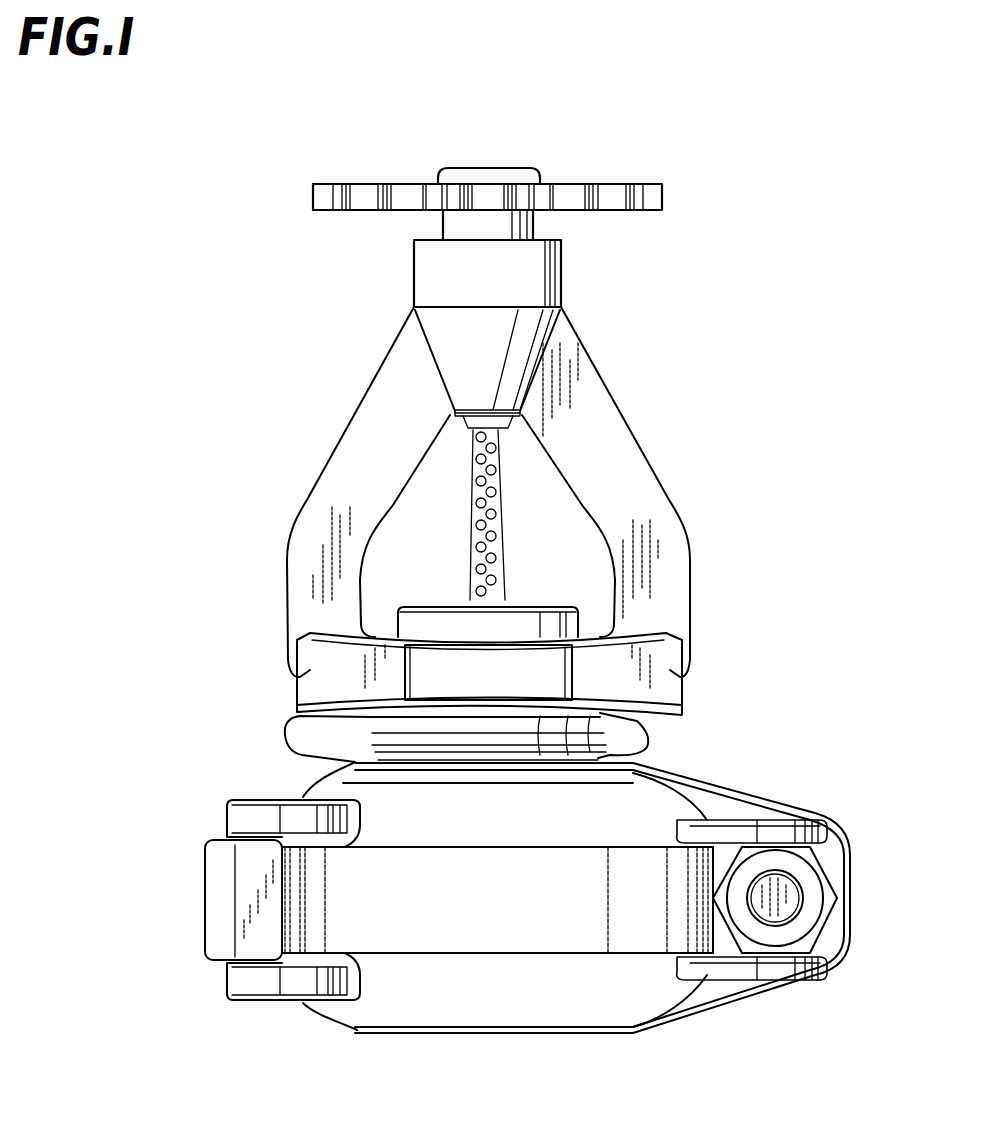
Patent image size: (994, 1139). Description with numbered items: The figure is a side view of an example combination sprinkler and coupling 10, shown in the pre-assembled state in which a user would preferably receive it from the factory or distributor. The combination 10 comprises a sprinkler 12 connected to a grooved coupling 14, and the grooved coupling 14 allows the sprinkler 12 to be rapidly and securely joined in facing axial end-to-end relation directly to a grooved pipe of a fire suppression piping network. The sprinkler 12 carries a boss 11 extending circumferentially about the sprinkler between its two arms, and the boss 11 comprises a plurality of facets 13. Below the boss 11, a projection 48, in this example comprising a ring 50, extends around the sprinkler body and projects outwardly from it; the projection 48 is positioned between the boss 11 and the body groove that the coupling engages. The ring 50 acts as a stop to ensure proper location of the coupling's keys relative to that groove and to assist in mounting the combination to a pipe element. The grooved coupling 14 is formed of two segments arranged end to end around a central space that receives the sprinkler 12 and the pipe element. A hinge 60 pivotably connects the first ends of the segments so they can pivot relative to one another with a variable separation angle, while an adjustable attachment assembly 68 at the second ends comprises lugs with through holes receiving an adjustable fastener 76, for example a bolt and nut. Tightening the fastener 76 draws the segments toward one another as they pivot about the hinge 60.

The combination sprinkler and coupling 10 is at (740, 312).
The boss 11 is at (683, 693).
The sprinkler 12 is at (693, 580).
The facets 13 is at (340, 680).
The grooved coupling 14 is at (700, 1023).
The projection 48 is at (566, 733).
The ring 50 is at (647, 752).
The hinge 60 is at (213, 902).
The adjustable attachment assembly 68 is at (837, 940).
The adjustable fastener 76 is at (793, 873).